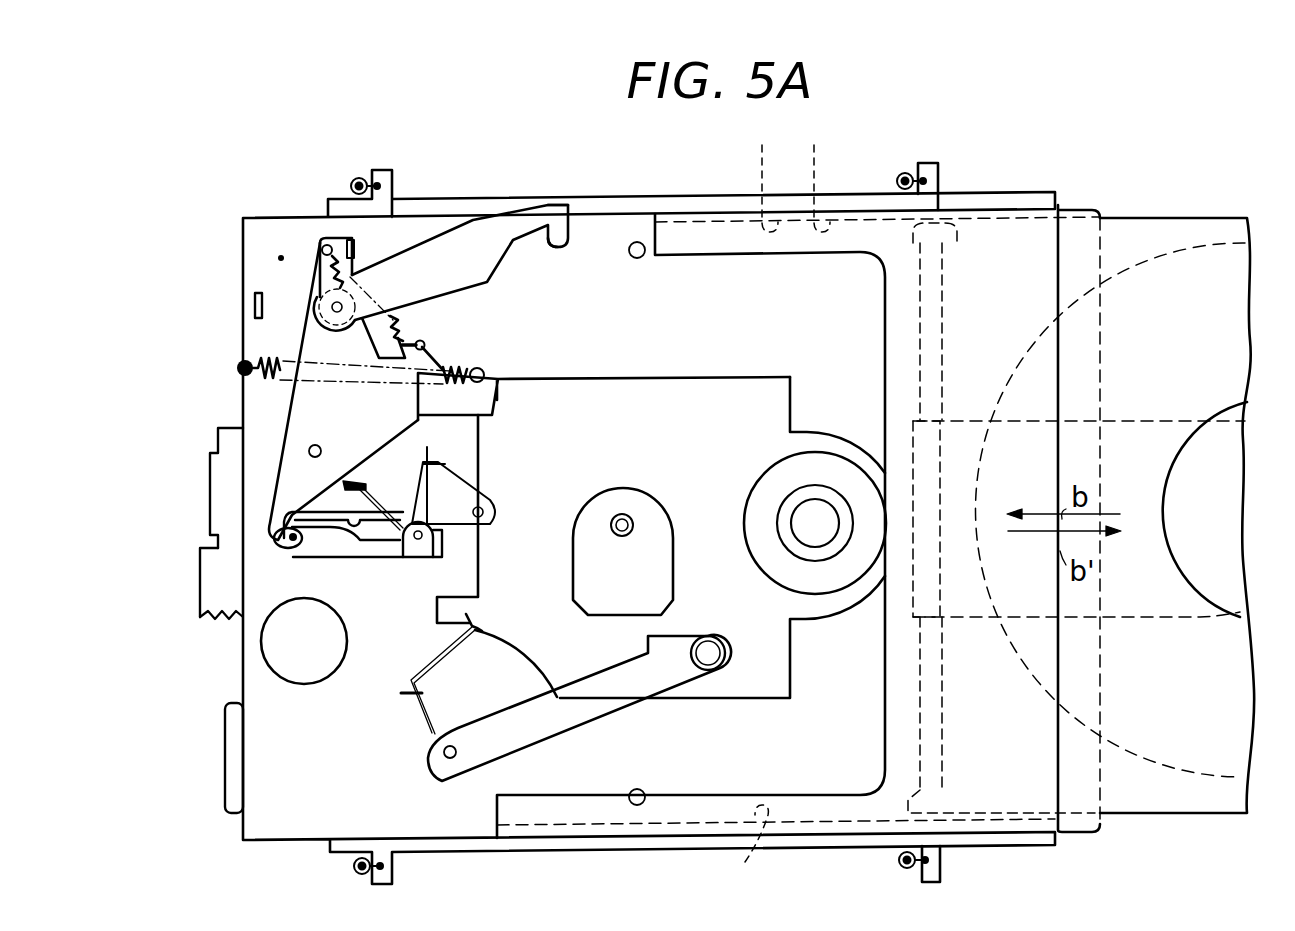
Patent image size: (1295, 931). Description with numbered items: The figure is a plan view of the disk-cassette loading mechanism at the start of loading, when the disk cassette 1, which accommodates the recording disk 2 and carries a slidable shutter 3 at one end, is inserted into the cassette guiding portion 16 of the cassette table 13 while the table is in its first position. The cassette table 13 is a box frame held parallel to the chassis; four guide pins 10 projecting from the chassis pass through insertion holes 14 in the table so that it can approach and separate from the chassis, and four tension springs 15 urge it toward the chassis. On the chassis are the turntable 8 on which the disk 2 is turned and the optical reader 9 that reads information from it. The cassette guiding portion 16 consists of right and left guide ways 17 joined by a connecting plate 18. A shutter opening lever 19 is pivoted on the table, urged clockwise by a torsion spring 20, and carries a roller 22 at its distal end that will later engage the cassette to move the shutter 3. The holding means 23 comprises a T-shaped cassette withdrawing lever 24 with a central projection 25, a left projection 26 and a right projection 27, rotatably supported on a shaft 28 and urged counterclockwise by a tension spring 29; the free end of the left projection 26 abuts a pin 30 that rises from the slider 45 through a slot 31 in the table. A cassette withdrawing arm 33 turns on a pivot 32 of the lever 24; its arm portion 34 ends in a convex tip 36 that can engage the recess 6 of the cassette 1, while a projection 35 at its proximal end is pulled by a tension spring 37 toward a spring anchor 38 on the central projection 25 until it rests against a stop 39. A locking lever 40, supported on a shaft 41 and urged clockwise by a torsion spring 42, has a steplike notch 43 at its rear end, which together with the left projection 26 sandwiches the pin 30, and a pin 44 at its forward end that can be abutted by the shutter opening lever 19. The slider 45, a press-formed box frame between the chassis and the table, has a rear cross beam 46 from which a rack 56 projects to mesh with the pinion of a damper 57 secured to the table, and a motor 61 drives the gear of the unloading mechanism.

The disk cassette 1 is at (1142, 218).
The recording disk 2 is at (1173, 257).
The shutter 3 is at (912, 425).
The recess 6 is at (947, 243).
The turntable 8 is at (773, 463).
The optical reader 9 is at (634, 516).
The guide pins 10 is at (638, 243).
The cassette table 13 is at (606, 214).
The insertion holes 14 is at (658, 245).
The tension springs 15 is at (359, 177).
The cassette guiding portion 16 is at (759, 172).
The guide ways 17 is at (771, 498).
The connecting plate 18 is at (1035, 270).
The shutter opening lever 19 is at (583, 680).
The torsion spring 20 is at (448, 653).
The roller 22 is at (712, 638).
The holding means 23 is at (285, 265).
The cassette withdrawing lever 24 is at (287, 405).
The central projection 25 is at (485, 397).
The left projection 26 is at (283, 467).
The right projection 27 is at (330, 307).
The shaft 28 is at (320, 446).
The tension spring 29 is at (272, 360).
The pin 30 is at (280, 542).
The slot 31 is at (365, 502).
The pivot 32 is at (313, 270).
The cassette withdrawing arm 33 is at (527, 225).
The arm portion 34 is at (490, 250).
The projection 35 is at (281, 257).
The convex tip 36 is at (572, 240).
The tension spring 37 is at (382, 275).
The spring anchor 38 is at (424, 347).
The stop 39 is at (332, 238).
The locking lever 40 is at (490, 524).
The shaft 41 is at (430, 538).
The torsion spring 42 is at (432, 483).
The steplike notch 43 is at (308, 550).
The pin 44 is at (492, 505).
The slider 45 is at (212, 483).
The cross beam 46 is at (215, 580).
The rack 56 is at (215, 623).
The damper 57 is at (305, 668).
The motor 61 is at (238, 740).